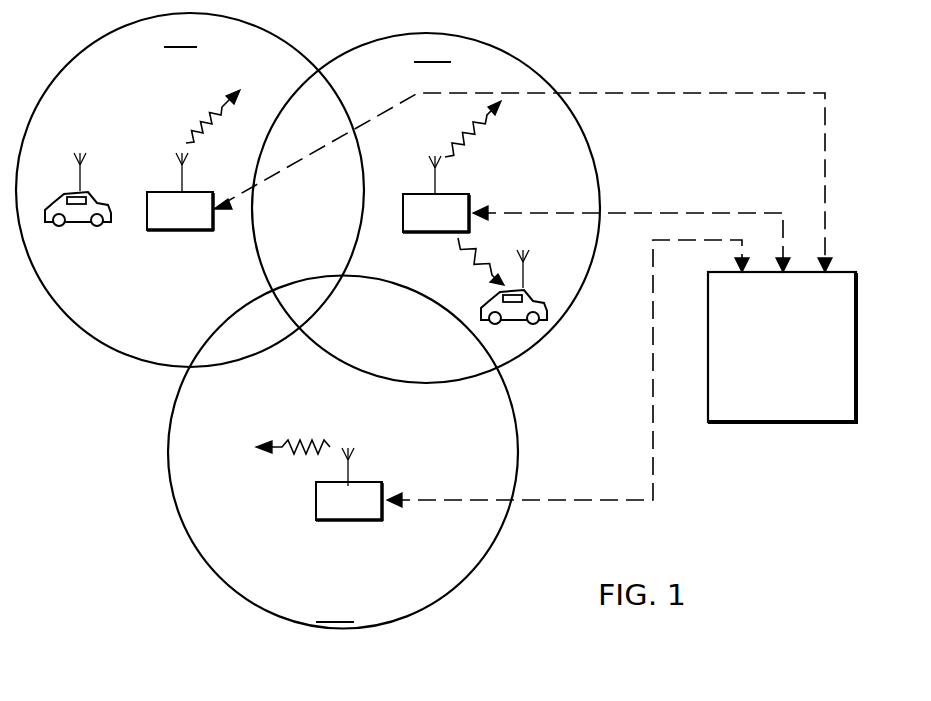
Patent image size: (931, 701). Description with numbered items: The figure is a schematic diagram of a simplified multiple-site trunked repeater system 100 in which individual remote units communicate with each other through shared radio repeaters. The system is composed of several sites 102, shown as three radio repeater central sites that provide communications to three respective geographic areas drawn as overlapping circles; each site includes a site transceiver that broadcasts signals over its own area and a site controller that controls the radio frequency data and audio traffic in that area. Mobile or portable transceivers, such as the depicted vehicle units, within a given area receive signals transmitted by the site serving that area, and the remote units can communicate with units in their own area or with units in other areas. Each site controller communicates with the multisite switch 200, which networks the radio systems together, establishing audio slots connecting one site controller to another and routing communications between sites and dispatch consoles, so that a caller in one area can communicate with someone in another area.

The trunked repeater system 100 is at (615, 409).
The sites 102 is at (177, 230).
The multisite switch 200 is at (810, 418).